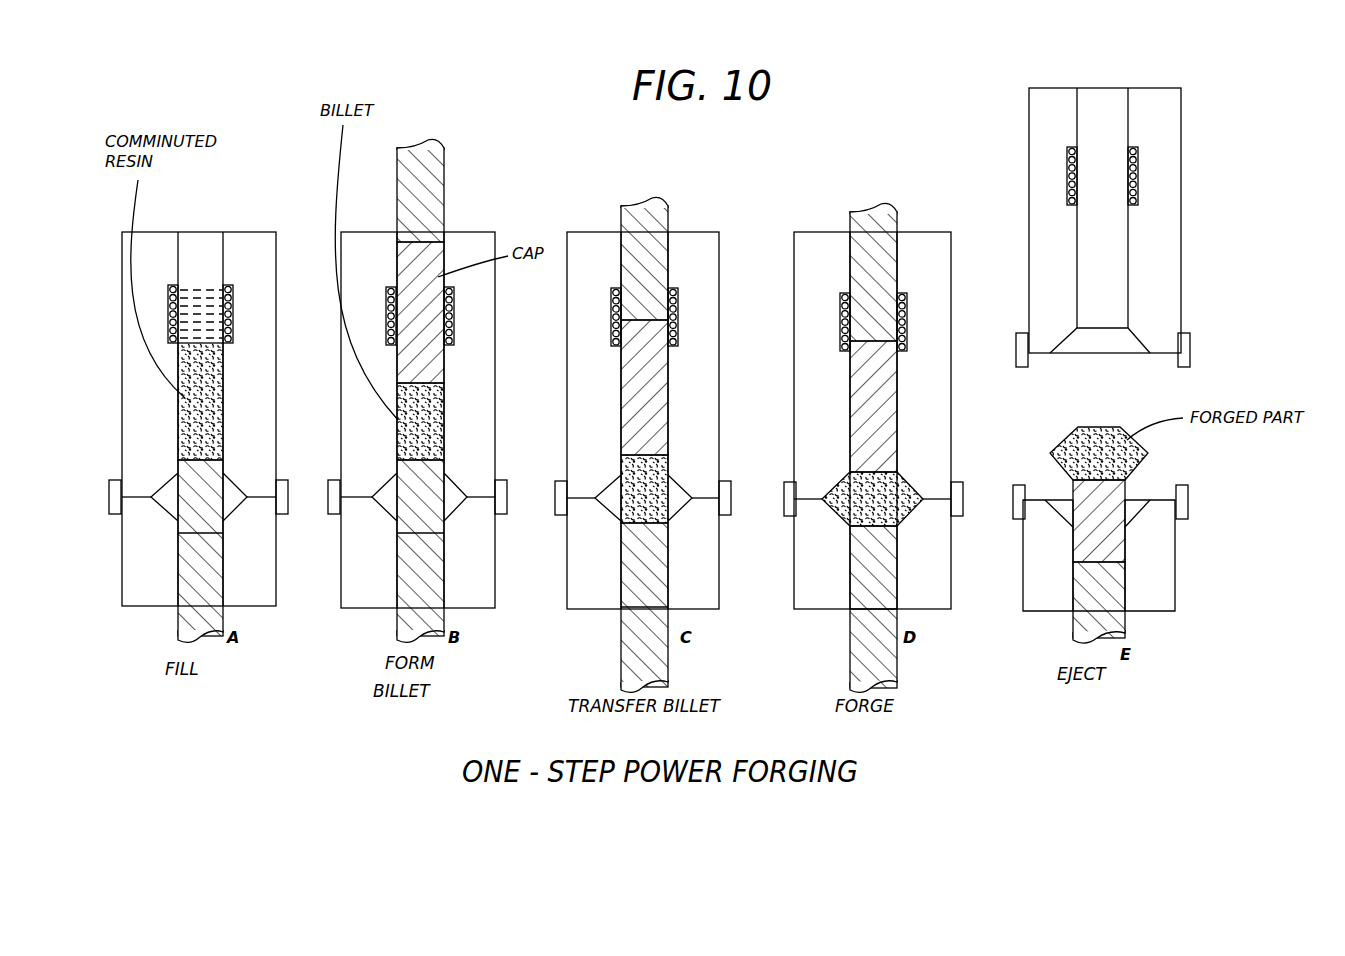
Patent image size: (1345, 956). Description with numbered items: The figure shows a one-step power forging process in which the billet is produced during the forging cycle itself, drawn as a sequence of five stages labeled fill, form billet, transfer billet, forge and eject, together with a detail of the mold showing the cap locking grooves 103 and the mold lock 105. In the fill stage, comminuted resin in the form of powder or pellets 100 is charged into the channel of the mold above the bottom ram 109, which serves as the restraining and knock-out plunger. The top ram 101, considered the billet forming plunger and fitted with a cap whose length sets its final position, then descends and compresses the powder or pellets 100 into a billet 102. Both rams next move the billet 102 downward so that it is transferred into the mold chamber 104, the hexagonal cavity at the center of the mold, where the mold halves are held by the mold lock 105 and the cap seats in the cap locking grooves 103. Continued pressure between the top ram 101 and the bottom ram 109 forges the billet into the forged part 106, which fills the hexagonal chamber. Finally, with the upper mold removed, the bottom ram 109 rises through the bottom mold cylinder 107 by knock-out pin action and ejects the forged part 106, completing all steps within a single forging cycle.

The powder or pellets 100 is at (215, 363).
The top ram 101 is at (428, 172).
The billet 102 is at (440, 403).
The cap locking grooves 103 is at (1137, 177).
The mold chamber 104 is at (650, 473).
The mold lock 105 is at (1184, 347).
The forged part 106 is at (893, 487).
The bottom mold cylinder 107 is at (1113, 542).
The bottom ram 109 is at (1110, 620).